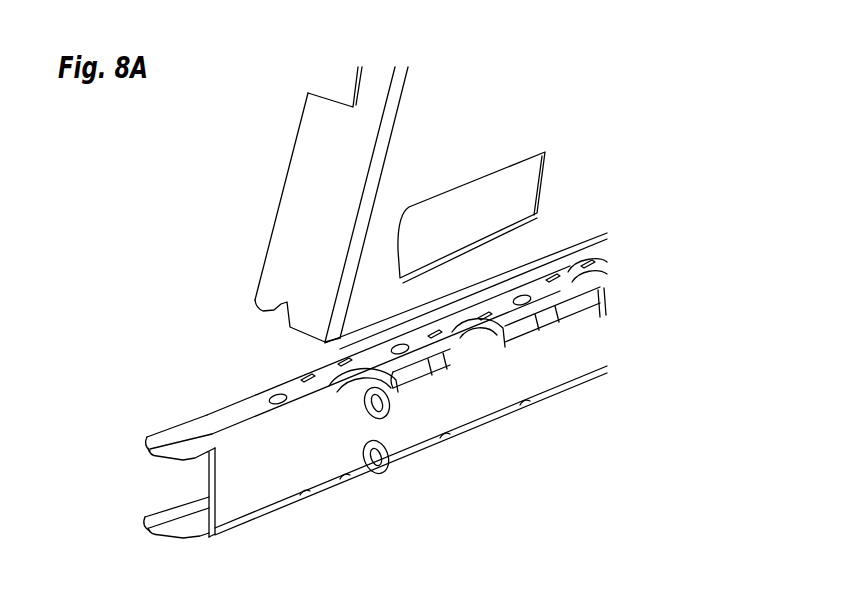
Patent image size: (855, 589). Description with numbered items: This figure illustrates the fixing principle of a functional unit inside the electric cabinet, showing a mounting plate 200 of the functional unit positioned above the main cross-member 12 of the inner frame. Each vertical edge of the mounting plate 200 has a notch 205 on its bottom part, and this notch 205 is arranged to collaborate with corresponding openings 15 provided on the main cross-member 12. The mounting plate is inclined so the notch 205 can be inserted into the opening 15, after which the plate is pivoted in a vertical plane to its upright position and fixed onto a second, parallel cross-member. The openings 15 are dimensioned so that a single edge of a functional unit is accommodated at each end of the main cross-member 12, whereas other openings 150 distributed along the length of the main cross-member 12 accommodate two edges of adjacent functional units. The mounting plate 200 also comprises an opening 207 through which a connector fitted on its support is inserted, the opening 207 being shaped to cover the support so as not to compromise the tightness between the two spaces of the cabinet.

The main cross-member 12 is at (458, 408).
The openings 15 is at (225, 425).
The openings 150 is at (487, 337).
The mounting plate 200 is at (279, 204).
The notch 205 is at (287, 303).
The opening 207 is at (498, 192).